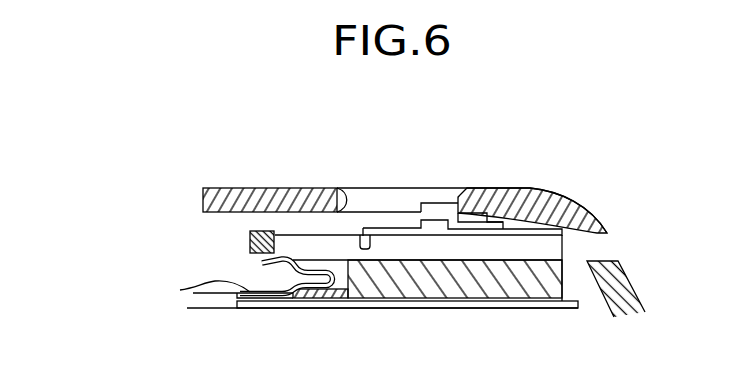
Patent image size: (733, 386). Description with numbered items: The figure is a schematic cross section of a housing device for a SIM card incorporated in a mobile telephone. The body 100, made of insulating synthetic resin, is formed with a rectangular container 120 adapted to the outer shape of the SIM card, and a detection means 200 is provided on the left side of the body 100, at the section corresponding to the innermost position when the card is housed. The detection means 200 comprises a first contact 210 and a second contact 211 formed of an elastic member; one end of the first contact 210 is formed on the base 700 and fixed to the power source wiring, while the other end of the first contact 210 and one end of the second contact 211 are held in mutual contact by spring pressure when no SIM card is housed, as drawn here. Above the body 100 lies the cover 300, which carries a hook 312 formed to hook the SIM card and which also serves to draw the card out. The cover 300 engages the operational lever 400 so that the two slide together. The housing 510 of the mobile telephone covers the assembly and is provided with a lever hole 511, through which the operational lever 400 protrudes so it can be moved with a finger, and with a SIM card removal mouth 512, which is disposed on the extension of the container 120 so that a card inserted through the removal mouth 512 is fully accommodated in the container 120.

The body 100 is at (493, 303).
The rectangular container 120 is at (553, 248).
The detection means 200 is at (108, 232).
The first contact 210 is at (237, 308).
The second contact 211 is at (258, 260).
The cover 300 is at (358, 230).
The hook 312 is at (364, 249).
The operational lever 400 is at (487, 218).
The housing 510 is at (563, 197).
The lever hole 511 is at (399, 188).
The SIM card removal mouth 512 is at (610, 250).
The base 700 is at (317, 310).